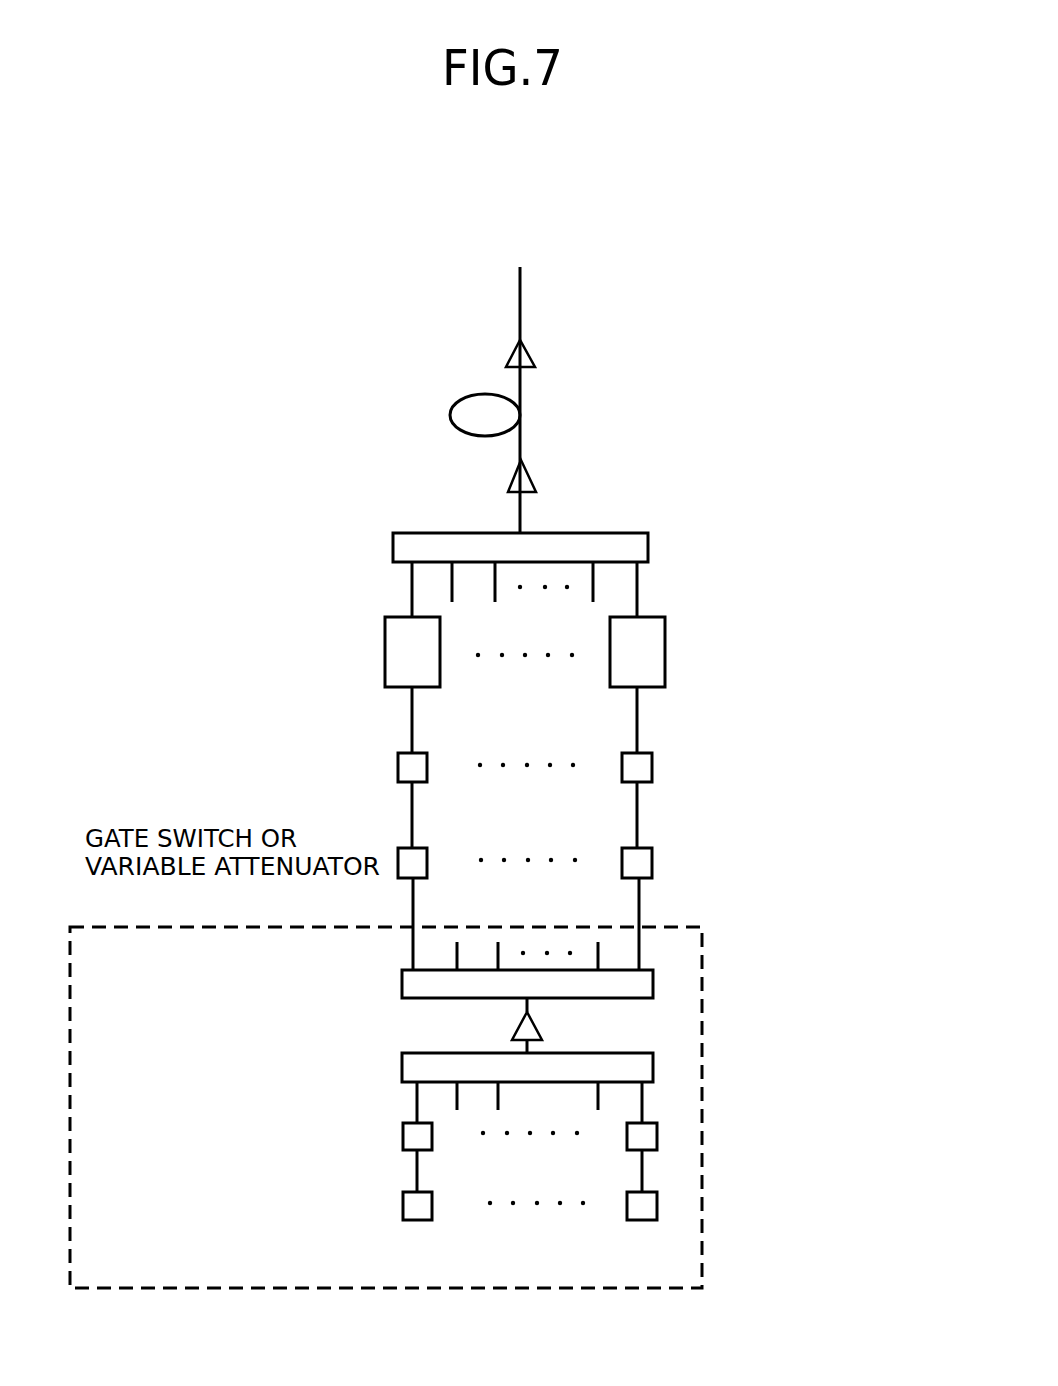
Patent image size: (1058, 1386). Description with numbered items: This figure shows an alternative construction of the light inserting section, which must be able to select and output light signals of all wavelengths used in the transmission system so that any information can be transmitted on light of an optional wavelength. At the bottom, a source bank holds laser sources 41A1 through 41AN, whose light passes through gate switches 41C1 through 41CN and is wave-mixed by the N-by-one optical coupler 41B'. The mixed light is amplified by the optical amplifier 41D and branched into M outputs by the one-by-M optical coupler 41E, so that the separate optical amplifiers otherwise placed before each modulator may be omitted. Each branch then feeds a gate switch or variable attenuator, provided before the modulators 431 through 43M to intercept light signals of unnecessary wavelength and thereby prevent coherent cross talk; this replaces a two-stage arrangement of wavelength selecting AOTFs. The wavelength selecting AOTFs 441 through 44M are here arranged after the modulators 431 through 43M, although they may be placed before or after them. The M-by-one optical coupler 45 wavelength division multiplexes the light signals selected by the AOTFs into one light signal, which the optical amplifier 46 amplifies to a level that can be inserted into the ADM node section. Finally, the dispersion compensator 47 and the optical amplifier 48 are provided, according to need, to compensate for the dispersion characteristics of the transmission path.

The optical amplifier 48 is at (530, 352).
The dispersion compensator 47 is at (457, 431).
The optical amplifier 46 is at (533, 480).
The optical coupler 45 is at (613, 532).
The wavelength selecting AOTF 441 is at (441, 665).
The wavelength selecting AOTF 44M is at (666, 665).
The modulator 431 is at (428, 765).
The modulator 43M is at (653, 776).
The 1×M optical coupler 41E is at (402, 995).
The optical amplifier 41D is at (543, 1034).
The N×1 optical coupler 41B' is at (395, 1064).
The gate switch 41C1 is at (403, 1150).
The gate switch 41CN is at (627, 1150).
The laser source 41A1 is at (403, 1205).
The laser source 41AN is at (627, 1205).